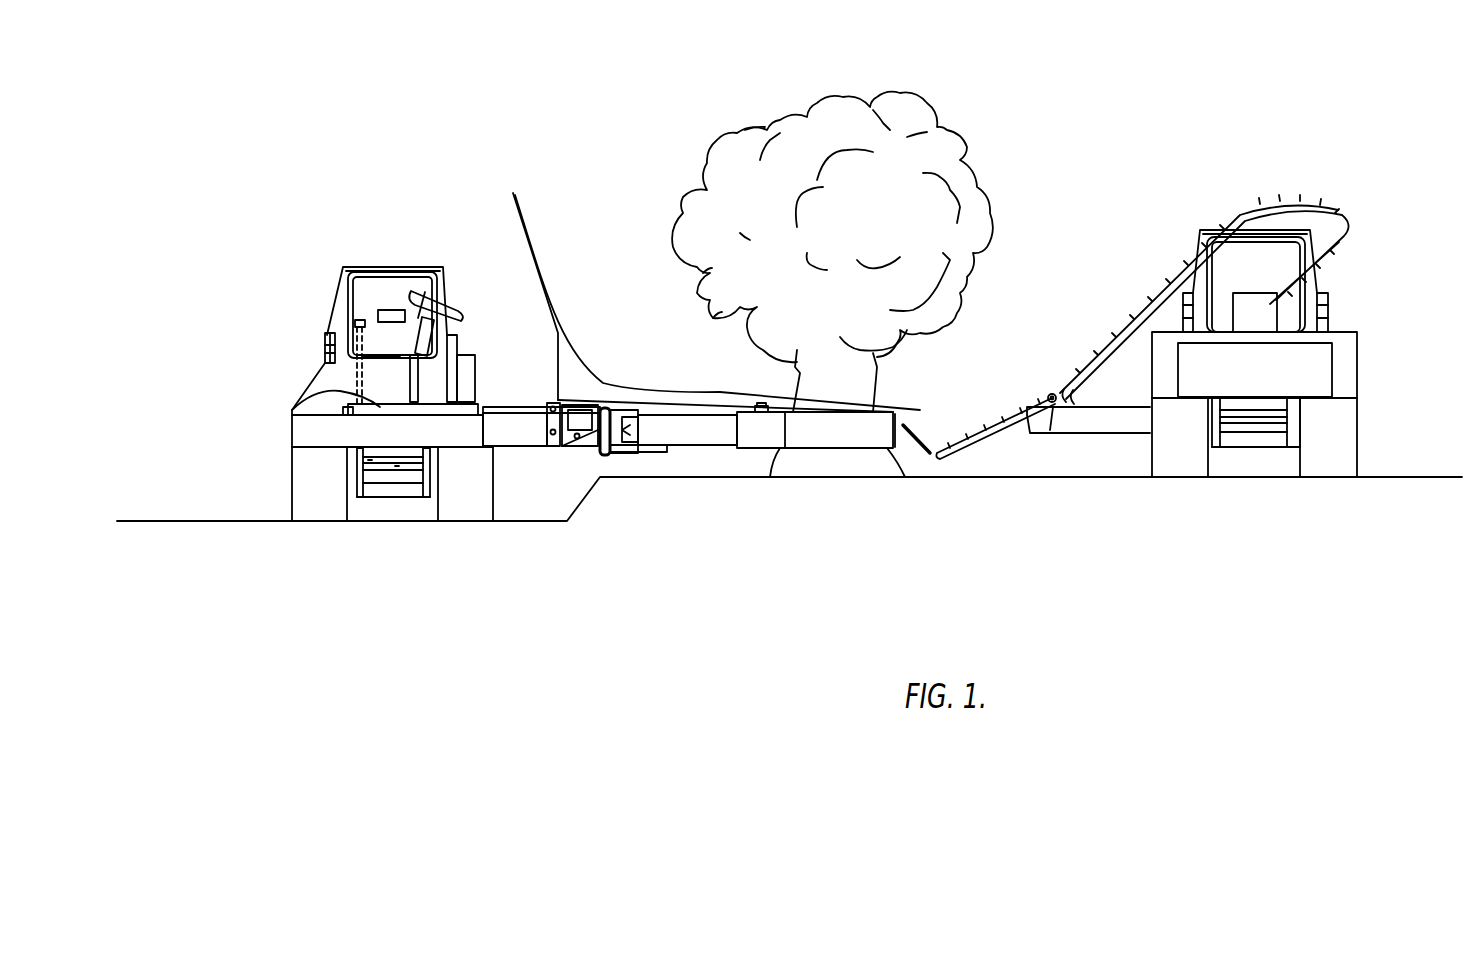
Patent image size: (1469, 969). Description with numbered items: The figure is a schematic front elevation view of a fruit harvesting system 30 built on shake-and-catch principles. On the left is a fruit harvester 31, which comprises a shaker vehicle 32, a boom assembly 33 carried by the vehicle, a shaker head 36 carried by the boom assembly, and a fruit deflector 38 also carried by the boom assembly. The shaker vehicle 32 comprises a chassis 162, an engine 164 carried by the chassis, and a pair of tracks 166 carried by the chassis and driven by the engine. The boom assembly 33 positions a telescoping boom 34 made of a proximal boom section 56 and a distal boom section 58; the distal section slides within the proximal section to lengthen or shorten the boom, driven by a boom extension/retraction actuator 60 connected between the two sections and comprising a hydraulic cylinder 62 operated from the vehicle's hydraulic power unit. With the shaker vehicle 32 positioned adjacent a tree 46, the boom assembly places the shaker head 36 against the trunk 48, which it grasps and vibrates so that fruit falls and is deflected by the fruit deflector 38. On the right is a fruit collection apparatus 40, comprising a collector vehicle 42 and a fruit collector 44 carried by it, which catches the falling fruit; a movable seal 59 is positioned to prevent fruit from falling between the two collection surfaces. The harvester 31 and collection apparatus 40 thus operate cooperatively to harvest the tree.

The fruit harvesting system 30 is at (1243, 60).
The fruit harvester 31 is at (265, 228).
The shaker vehicle 32 is at (343, 297).
The boom assembly 33 is at (307, 392).
The boom 34 is at (525, 432).
The shaker head 36 is at (683, 435).
The fruit deflector 38 is at (550, 283).
The fruit collection apparatus 40 is at (1382, 252).
The collector vehicle 42 is at (1357, 368).
The fruit collector 44 is at (1105, 325).
The tree 46 is at (967, 160).
The trunk 48 is at (873, 373).
The proximal boom section 56 is at (468, 448).
The distal boom section 58 is at (520, 448).
The movable seal 59 is at (917, 443).
The boom extension/retraction actuator 60 is at (493, 407).
The hydraulic cylinder 62 is at (292, 410).
The chassis 162 is at (290, 457).
The engine 164 is at (377, 353).
The tracks 166 is at (453, 510).